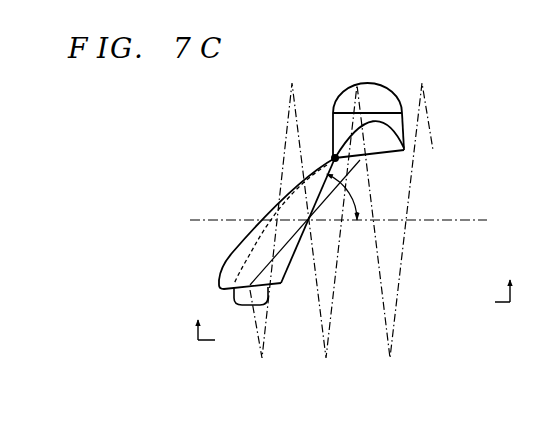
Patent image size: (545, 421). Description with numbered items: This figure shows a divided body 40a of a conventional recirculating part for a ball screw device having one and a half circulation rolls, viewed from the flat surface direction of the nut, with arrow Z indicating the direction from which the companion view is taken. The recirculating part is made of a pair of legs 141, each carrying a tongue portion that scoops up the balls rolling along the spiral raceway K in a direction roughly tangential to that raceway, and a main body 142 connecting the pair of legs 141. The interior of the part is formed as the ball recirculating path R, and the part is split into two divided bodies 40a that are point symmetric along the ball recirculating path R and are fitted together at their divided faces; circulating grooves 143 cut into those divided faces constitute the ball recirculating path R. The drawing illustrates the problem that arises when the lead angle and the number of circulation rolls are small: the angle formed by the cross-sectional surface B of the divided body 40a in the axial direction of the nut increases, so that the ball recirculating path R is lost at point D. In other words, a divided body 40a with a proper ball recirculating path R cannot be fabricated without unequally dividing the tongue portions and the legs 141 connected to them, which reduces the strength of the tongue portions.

The leg 141 is at (386, 93).
The main body 142 is at (274, 202).
The circulating groove 143 is at (291, 178).
The divided body 40a is at (246, 243).
The point D is at (334, 154).
The spiral raceway K is at (288, 124).
The ball recirculating path R is at (323, 206).
The cross-sectional surface B is at (289, 265).
The arrow Z is at (353, 306).